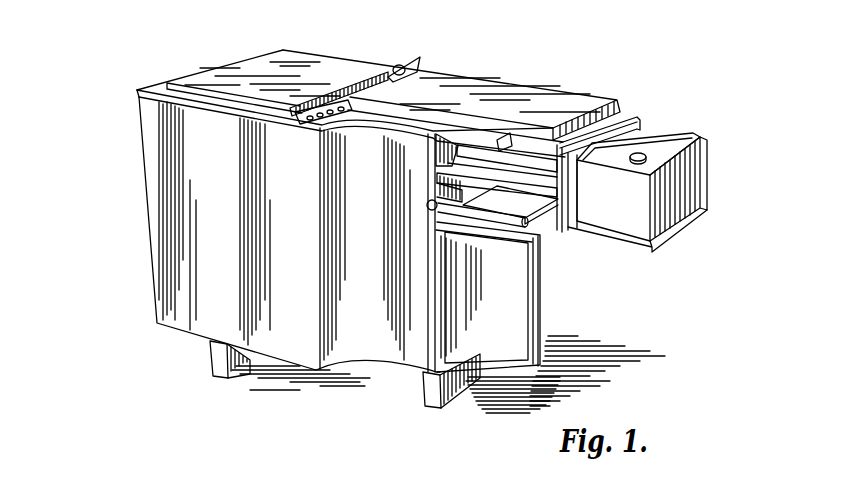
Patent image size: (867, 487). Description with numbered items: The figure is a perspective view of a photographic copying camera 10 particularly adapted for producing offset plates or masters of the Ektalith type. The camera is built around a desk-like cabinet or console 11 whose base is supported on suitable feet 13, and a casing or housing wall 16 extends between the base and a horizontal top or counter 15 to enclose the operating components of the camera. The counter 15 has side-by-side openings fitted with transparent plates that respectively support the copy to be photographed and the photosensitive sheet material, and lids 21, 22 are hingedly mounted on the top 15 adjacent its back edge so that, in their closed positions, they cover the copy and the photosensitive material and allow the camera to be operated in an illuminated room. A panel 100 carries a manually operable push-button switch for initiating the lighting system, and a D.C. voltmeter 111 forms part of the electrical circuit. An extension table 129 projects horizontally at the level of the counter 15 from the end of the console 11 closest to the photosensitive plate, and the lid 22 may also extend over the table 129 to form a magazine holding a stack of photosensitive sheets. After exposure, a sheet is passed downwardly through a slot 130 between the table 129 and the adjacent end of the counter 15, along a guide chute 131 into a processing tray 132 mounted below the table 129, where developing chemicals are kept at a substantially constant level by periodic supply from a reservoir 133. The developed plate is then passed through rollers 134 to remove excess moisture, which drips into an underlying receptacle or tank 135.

The photographic copying camera 10 is at (107, 122).
The desk-like cabinet or console 11 is at (146, 199).
The feet 13 is at (218, 361).
The horizontal top or counter 15 is at (161, 88).
The casing or housing wall 16 is at (163, 268).
The lid 21 is at (320, 62).
The lid 22 is at (573, 100).
The panel 100 is at (300, 128).
The D.C. voltmeter 111 is at (414, 58).
The extension table 129 is at (625, 118).
The slot 130 is at (431, 134).
The guide chute 131 is at (436, 156).
The processing tray 132 is at (440, 200).
The reservoir 133 is at (708, 165).
The rollers 134 is at (452, 230).
The receptacle or tank 135 is at (540, 294).